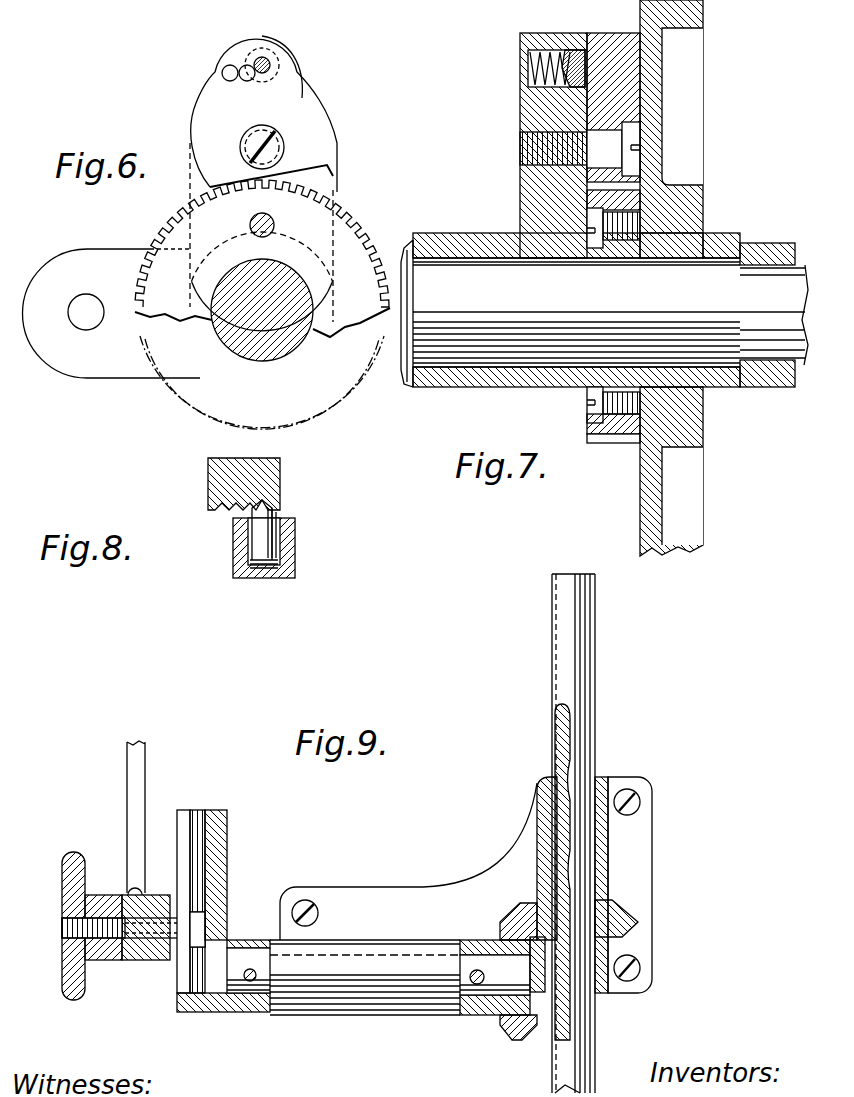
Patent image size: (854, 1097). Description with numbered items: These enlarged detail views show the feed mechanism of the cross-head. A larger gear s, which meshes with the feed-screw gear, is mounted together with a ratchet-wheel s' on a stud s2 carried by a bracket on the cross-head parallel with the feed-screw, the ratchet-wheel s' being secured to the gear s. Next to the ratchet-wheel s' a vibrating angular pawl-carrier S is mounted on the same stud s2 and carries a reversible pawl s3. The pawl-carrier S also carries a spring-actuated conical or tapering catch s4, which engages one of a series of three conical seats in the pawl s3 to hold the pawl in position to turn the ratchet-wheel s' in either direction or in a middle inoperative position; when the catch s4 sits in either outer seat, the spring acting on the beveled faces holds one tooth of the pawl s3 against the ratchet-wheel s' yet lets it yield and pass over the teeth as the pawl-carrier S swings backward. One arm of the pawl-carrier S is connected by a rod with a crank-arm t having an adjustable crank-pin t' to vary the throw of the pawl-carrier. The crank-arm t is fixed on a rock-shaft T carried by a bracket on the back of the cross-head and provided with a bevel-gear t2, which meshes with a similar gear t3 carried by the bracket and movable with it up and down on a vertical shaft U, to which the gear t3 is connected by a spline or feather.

In FIG. 6, the gear s is at (254, 75).
In FIG. 7, the gear s is at (658, 278).
In FIG. 6, the ratchet-wheel s' is at (285, 225).
In FIG. 7, the ratchet-wheel s' is at (613, 430).
In FIG. 6, the stud s2 is at (262, 310).
In FIG. 7, the stud s2 is at (604, 313).
In FIG. 6, the reversible pawl s3 is at (264, 114).
In FIG. 7, the reversible pawl s3 is at (615, 33).
In FIG. 8, the reversible pawl s3 is at (283, 478).
In FIG. 7, the spring-actuated conical catch s4 is at (568, 83).
In FIG. 8, the spring-actuated conical catch s4 is at (264, 530).
In FIG. 6, the vibrating pawl-carrier S is at (337, 183).
In FIG. 7, the vibrating pawl-carrier S is at (520, 105).
In FIG. 8, the vibrating pawl-carrier S is at (262, 580).
In FIG. 9, the crank-arm t is at (228, 875).
In FIG. 9, the adjustable crank-pin t' is at (146, 942).
In FIG. 9, the bevel-gear t2 is at (503, 1037).
In FIG. 9, the bevel-gear t3 is at (640, 928).
In FIG. 9, the rock-shaft T is at (225, 985).
In FIG. 9, the vertical shaft U is at (552, 650).